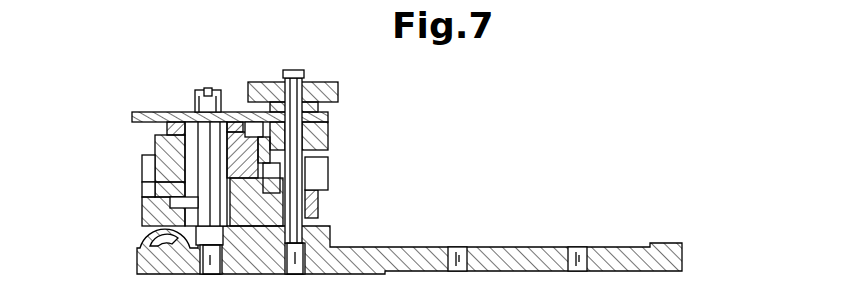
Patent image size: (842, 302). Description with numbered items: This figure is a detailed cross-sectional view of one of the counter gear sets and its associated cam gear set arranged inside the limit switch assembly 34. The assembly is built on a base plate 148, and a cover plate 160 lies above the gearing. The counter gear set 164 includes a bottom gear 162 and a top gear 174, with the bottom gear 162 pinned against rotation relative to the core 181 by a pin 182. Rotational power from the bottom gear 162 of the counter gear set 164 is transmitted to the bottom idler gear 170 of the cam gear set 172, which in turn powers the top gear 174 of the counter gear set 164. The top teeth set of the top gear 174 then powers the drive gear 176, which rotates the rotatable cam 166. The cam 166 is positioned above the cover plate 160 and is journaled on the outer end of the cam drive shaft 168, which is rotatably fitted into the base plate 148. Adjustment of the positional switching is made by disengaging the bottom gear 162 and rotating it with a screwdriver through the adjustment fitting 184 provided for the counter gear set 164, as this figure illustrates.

The limit switch assembly 34 is at (113, 52).
The base plate 148 is at (415, 246).
The cover plate 160 is at (137, 112).
The bottom gear 162 is at (178, 208).
The counter gear set 164 is at (143, 167).
The rotatable cam 166 is at (339, 93).
The cam drive shaft 168 is at (312, 207).
The bottom idler gear 170 is at (328, 176).
The cam gear set 172 is at (378, 151).
The top gear 174 is at (155, 142).
The drive gear 176 is at (329, 131).
The core 181 is at (198, 181).
The pin 182 is at (150, 210).
The adjustment fitting 184 is at (197, 90).